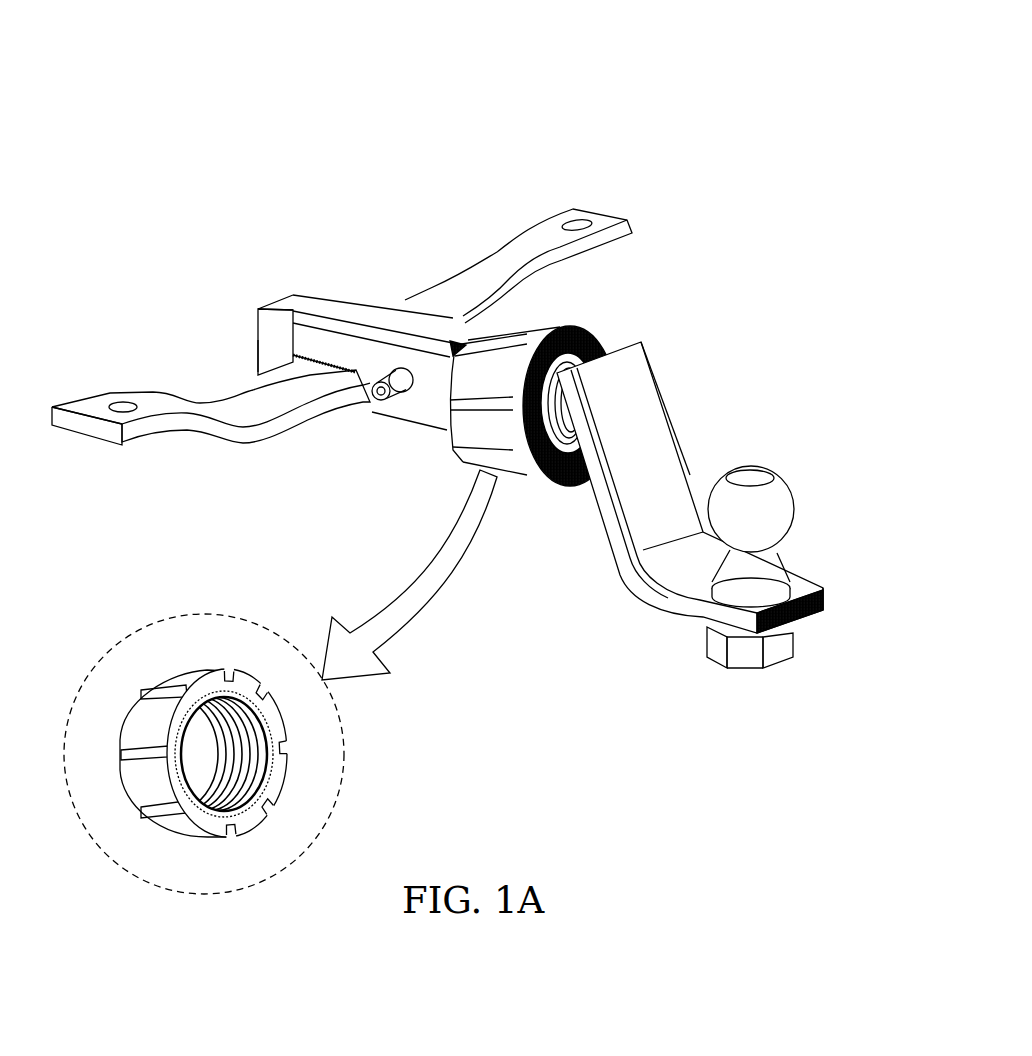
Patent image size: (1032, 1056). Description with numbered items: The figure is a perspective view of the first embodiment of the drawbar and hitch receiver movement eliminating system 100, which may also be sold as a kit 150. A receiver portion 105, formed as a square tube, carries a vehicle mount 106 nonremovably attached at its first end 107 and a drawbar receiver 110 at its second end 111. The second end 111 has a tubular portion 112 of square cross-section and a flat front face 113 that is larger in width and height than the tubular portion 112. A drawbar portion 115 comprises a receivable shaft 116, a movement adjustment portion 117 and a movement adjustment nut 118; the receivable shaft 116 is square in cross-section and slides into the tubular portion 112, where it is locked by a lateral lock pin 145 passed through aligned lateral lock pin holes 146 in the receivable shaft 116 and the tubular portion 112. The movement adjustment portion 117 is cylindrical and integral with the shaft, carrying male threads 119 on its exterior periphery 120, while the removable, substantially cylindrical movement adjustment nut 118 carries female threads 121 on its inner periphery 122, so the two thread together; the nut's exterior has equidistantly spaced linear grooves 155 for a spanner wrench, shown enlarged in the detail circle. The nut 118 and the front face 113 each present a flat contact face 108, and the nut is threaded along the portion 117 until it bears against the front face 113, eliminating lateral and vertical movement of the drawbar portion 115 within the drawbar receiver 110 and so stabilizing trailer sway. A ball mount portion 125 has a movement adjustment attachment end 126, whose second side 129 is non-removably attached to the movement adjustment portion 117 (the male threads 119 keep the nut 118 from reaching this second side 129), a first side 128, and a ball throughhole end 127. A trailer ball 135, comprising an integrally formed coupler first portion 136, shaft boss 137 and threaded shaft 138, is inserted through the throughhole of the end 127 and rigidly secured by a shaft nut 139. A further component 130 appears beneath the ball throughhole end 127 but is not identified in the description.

The drawbar and hitch receiver movement eliminating system 100 is at (677, 48).
The kit 150 is at (717, 82).
The receiver portion 105 is at (363, 240).
The vehicle mount 106 is at (556, 213).
The first end 107 is at (257, 323).
The flat contact face 108 is at (445, 475).
The drawbar receiver 110 is at (347, 300).
The second end 111 is at (433, 402).
The tubular portion 112 is at (424, 322).
The front face 113 is at (456, 350).
The drawbar portion 115 is at (260, 345).
The receivable shaft 116 is at (283, 303).
The movement adjustment portion 117 is at (612, 333).
The movement adjustment nut 118 is at (499, 390).
The male threads 119 is at (528, 480).
The exterior periphery 120 is at (458, 508).
The female threads 121 is at (260, 787).
The inner periphery 122 is at (230, 753).
The ball mount portion 125 is at (687, 463).
The movement adjustment attachment end 126 is at (645, 375).
The ball throughhole end 127 is at (800, 590).
The first side 128 is at (637, 407).
The second side 129 is at (610, 548).
The ball nut 130 is at (715, 648).
The trailer ball 135 is at (797, 517).
The coupler first portion 136 is at (790, 490).
The shaft boss 137 is at (827, 617).
The threaded shaft 138 is at (753, 688).
The shaft nut 139 is at (747, 657).
The lateral lock pin 145 is at (378, 393).
The lateral lock pin holes 146 is at (397, 400).
The linear grooves 155 is at (130, 754).